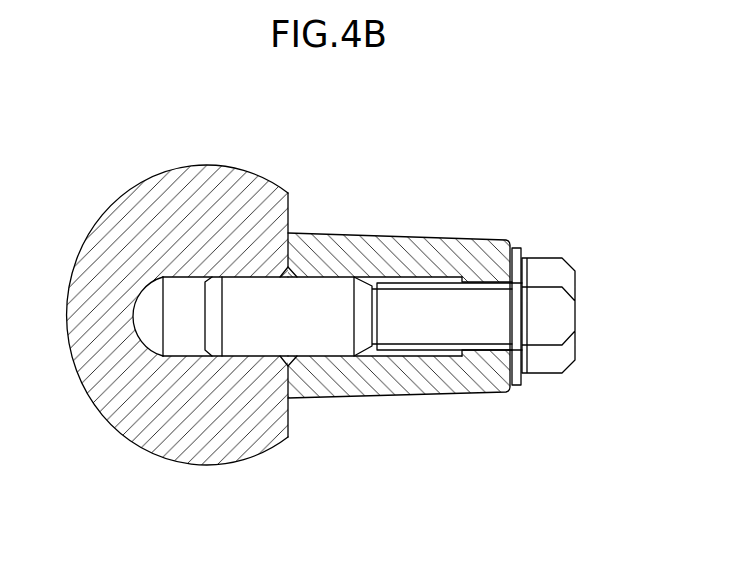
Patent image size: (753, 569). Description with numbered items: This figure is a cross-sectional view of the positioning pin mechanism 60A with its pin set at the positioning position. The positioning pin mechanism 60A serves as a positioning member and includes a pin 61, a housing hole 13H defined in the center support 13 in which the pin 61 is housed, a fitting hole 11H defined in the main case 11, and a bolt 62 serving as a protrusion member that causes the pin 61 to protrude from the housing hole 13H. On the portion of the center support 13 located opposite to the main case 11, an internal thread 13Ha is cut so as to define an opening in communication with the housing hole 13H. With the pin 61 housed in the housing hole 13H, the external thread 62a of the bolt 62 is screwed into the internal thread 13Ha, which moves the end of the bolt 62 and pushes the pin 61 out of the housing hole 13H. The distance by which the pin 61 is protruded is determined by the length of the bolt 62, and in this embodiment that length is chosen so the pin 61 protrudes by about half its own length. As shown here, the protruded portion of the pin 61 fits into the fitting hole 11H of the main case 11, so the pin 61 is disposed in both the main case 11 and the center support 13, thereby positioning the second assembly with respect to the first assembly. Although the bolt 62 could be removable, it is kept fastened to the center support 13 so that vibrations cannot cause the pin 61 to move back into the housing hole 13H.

The main case 11 is at (157, 183).
The fitting hole 11H is at (180, 357).
The positioning pin mechanism 60A is at (308, 218).
The pin 61 is at (340, 296).
The center support 13 is at (466, 247).
The housing hole 13H is at (443, 358).
The internal thread 13Ha is at (483, 350).
The bolt 62 is at (563, 315).
The external thread 62a is at (517, 316).